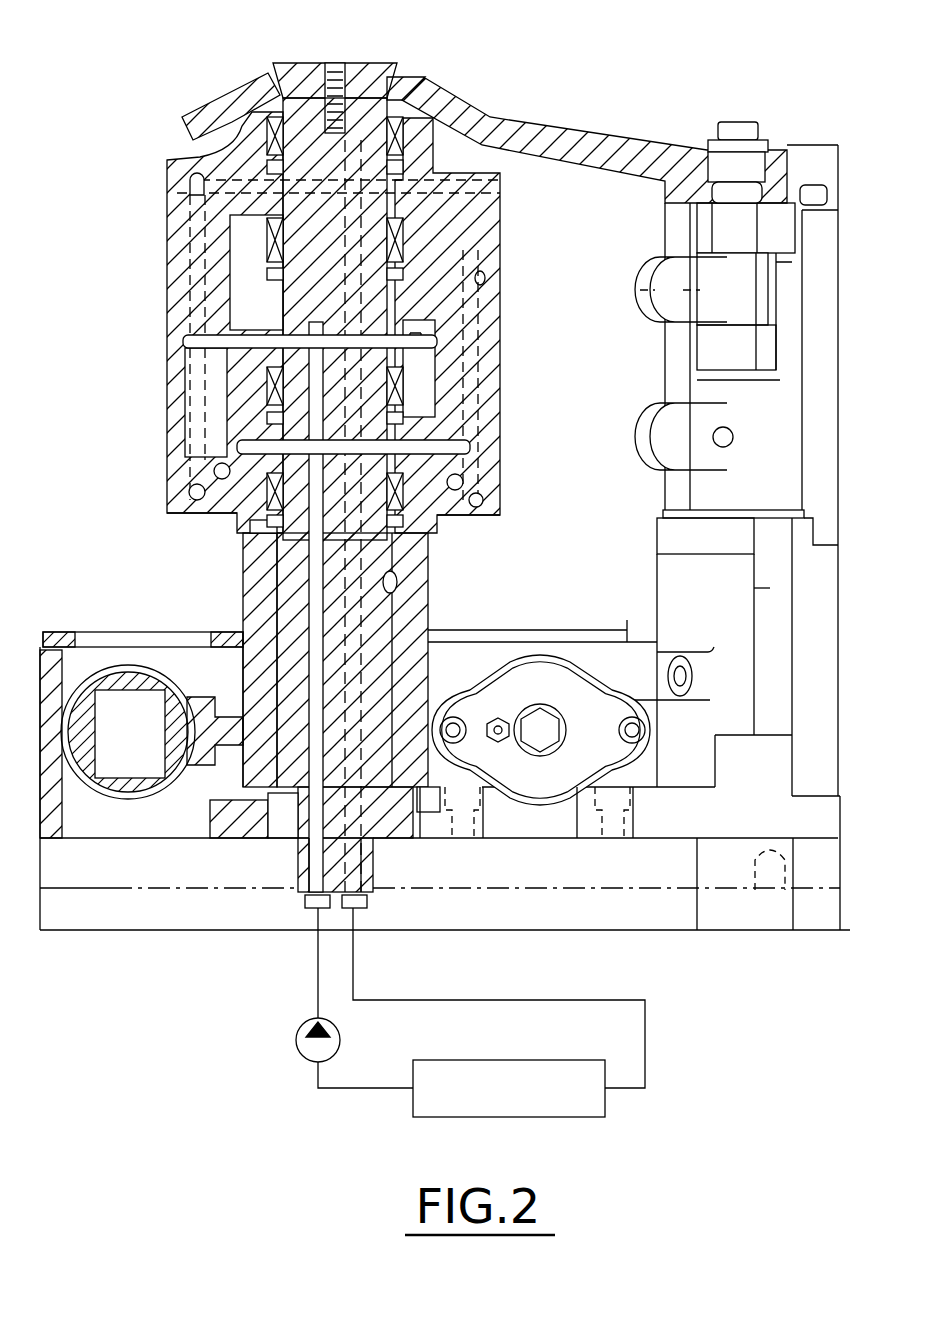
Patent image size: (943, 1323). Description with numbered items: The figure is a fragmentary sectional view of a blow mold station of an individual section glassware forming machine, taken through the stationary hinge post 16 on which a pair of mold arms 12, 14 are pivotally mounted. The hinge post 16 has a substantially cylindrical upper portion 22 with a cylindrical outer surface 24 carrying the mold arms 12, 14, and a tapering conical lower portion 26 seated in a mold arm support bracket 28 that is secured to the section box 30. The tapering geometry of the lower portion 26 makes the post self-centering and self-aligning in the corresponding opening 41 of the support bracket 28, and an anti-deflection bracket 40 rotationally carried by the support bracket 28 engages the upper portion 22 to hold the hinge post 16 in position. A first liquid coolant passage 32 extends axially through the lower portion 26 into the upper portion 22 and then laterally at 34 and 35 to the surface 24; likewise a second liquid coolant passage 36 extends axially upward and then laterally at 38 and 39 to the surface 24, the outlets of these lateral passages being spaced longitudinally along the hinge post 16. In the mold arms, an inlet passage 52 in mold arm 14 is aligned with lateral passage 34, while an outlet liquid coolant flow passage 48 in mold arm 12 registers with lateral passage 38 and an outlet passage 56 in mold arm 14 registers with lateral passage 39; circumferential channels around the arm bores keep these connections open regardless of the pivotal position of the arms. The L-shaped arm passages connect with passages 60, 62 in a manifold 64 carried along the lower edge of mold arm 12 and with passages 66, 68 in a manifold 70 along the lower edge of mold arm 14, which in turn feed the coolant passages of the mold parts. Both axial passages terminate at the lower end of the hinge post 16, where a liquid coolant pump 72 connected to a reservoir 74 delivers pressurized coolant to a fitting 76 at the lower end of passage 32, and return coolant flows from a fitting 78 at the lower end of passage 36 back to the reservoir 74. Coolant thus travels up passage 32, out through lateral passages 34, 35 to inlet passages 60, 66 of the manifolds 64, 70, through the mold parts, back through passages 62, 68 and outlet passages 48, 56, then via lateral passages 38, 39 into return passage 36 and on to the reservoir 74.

The mold arm 12 is at (512, 235).
The mold arm 14 is at (160, 330).
The hinge post 16 is at (265, 584).
The upper portion 22 is at (380, 87).
The cylindrical outer surface 24 is at (277, 93).
The lower portion 26 is at (390, 662).
The mold arm support bracket 28 is at (245, 630).
The section box 30 is at (840, 850).
The first liquid coolant passage 32 is at (315, 853).
The lateral passage 34 is at (293, 335).
The lateral passage 35 is at (277, 555).
The second liquid coolant passage 36 is at (358, 860).
The lateral passage 38 is at (297, 253).
The lateral passage 39 is at (312, 200).
The anti-deflection bracket 40 is at (587, 137).
The opening 41 is at (410, 590).
The outlet liquid coolant flow passage 48 is at (488, 340).
The inlet liquid coolant flow passage 52 is at (213, 385).
The outlet passage 56 is at (167, 275).
The passage 60 is at (507, 460).
The passage 62 is at (508, 487).
The manifold 64 is at (512, 502).
The passage 66 is at (222, 480).
The passage 68 is at (190, 489).
The manifold 70 is at (168, 503).
The liquid coolant pump 72 is at (296, 1036).
The reservoir 74 is at (573, 1118).
The fitting 76 is at (308, 907).
The fitting 78 is at (365, 910).